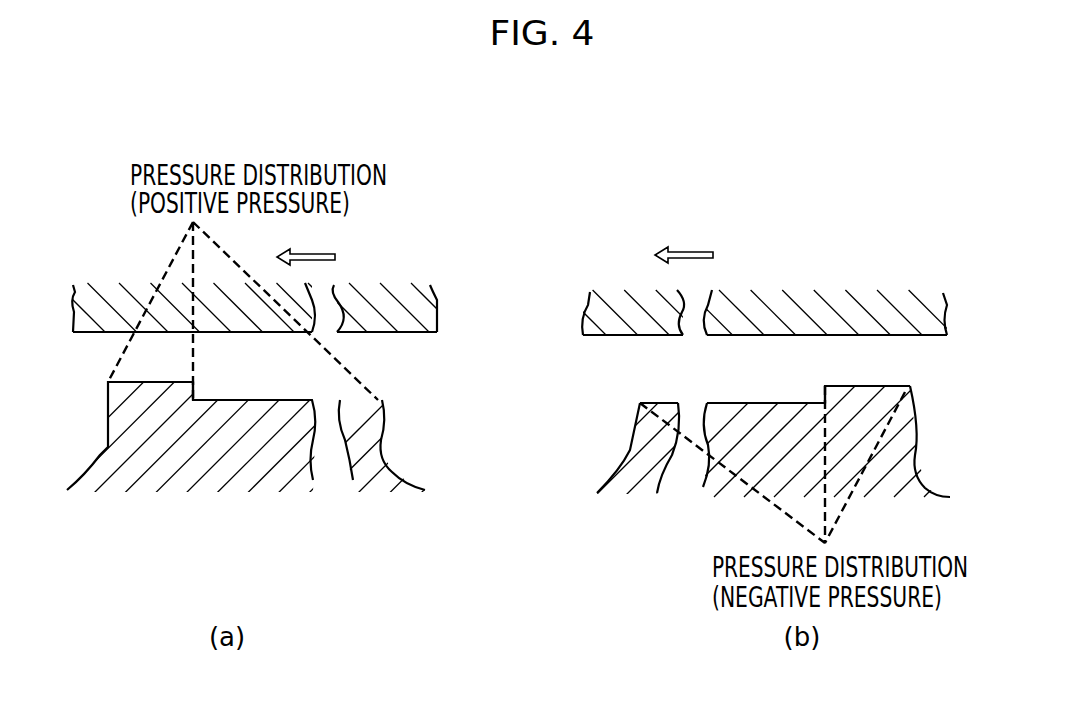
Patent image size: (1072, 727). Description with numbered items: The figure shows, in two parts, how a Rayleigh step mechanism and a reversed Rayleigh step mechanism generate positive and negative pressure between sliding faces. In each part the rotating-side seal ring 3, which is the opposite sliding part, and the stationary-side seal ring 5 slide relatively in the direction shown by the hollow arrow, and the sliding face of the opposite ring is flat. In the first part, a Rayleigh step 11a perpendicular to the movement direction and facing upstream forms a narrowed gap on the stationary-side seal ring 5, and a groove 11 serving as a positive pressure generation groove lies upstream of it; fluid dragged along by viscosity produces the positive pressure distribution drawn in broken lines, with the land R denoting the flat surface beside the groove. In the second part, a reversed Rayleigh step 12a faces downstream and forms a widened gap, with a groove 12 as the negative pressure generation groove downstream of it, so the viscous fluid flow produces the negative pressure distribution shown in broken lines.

The rotating-side seal ring 3 is at (100, 285).
The stationary-side seal ring 5 is at (197, 497).
The land R is at (150, 380).
The groove 11 is at (305, 384).
The Rayleigh step 11a is at (200, 381).
The groove 12 is at (722, 402).
The reversed Rayleigh step 12a is at (822, 398).